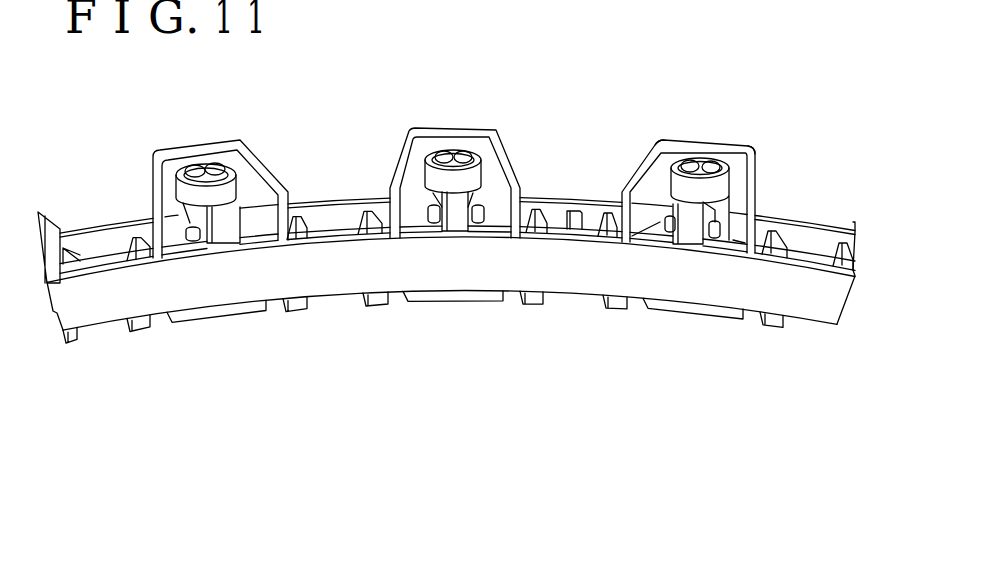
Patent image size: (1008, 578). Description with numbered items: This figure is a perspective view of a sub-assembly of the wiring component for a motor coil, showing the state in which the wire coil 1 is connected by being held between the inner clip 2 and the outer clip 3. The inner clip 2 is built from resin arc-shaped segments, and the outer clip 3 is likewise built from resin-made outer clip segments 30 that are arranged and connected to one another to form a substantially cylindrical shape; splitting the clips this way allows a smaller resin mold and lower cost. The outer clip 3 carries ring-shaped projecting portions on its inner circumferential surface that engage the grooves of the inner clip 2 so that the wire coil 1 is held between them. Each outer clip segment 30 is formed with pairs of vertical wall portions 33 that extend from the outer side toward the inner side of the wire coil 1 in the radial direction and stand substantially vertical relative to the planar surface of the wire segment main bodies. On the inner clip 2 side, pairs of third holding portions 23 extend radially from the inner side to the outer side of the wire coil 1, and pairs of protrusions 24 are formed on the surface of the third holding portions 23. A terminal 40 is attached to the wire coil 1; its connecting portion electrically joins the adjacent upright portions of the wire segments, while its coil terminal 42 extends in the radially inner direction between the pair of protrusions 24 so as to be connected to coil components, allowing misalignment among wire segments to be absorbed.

The wire coil 1 is at (679, 167).
The inner clip 2 is at (827, 303).
The outer clip 3 is at (805, 221).
The third holding portion 23 is at (657, 221).
The protrusion 24 is at (669, 232).
The outer clip segment 30 is at (696, 230).
The vertical wall portion 33 is at (655, 146).
The terminal 40 is at (678, 191).
The coil terminal 42 is at (688, 230).